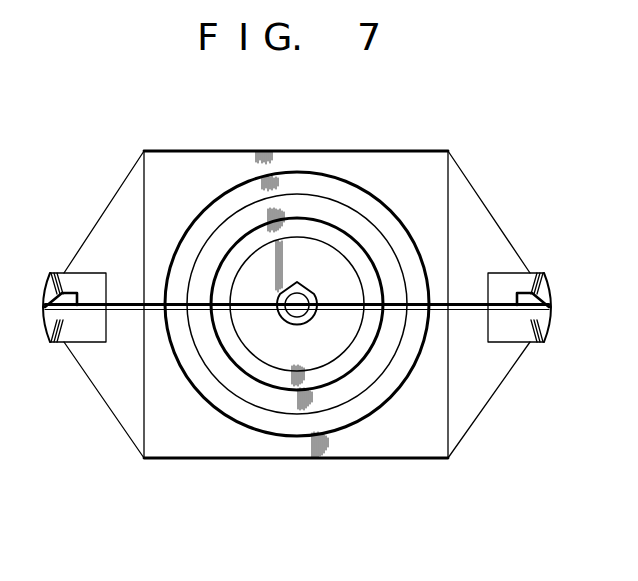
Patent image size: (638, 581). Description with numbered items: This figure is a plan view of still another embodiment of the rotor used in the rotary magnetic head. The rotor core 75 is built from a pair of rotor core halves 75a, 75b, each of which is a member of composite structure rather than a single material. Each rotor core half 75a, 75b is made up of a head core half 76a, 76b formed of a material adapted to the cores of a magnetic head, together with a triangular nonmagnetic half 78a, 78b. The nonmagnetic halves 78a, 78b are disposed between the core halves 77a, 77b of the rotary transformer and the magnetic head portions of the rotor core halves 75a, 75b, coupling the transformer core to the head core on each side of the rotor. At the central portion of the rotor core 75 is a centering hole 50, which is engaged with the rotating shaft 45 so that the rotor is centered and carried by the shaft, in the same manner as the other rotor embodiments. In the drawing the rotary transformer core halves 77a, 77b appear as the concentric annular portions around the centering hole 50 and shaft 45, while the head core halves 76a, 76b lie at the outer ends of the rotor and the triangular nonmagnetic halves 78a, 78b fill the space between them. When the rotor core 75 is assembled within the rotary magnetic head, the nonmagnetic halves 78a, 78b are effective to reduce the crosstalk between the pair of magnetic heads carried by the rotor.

The rotor core 75 is at (426, 128).
The rotor core half 75a is at (444, 142).
The rotor core half 75b is at (418, 463).
The triangular nonmagnetic half 78a is at (495, 228).
The triangular nonmagnetic half 78b is at (107, 395).
The head core half 76a is at (510, 279).
The head core half 76b is at (515, 327).
The core half of the rotary transformer 77a is at (363, 227).
The core half of the rotary transformer 77b is at (365, 375).
The rotating shaft 45 is at (300, 292).
The centering hole 50 is at (293, 321).